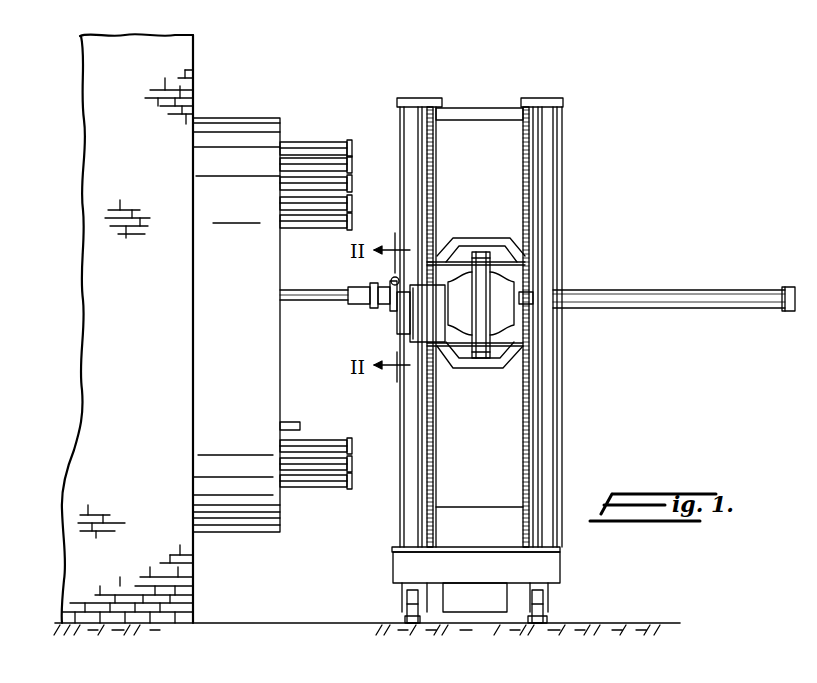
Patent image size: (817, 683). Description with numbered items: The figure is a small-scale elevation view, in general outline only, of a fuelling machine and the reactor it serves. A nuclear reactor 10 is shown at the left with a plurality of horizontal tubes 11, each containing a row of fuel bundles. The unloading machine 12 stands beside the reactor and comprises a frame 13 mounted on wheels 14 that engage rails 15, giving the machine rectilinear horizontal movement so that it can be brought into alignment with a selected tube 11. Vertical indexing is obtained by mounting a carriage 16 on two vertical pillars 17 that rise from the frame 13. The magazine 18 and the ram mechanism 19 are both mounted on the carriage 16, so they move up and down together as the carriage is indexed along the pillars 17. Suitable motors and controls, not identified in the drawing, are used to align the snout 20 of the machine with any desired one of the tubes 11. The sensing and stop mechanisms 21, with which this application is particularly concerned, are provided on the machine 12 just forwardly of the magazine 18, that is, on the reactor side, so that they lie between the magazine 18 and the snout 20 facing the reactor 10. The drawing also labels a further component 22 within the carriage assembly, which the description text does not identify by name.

The nuclear reactor 10 is at (180, 48).
The horizontal tubes 11 is at (302, 140).
The unloading machine 12 is at (600, 69).
The frame 13 is at (550, 569).
The wheels 14 is at (405, 598).
The rails 15 is at (537, 625).
The carriage 16 is at (480, 237).
The vertical pillars 17 is at (522, 444).
The magazine 18 is at (433, 347).
The ram mechanism 19 is at (612, 302).
The snout 20 is at (358, 305).
The sensing and stop mechanisms 21 is at (388, 279).
The rotor 22 is at (482, 345).